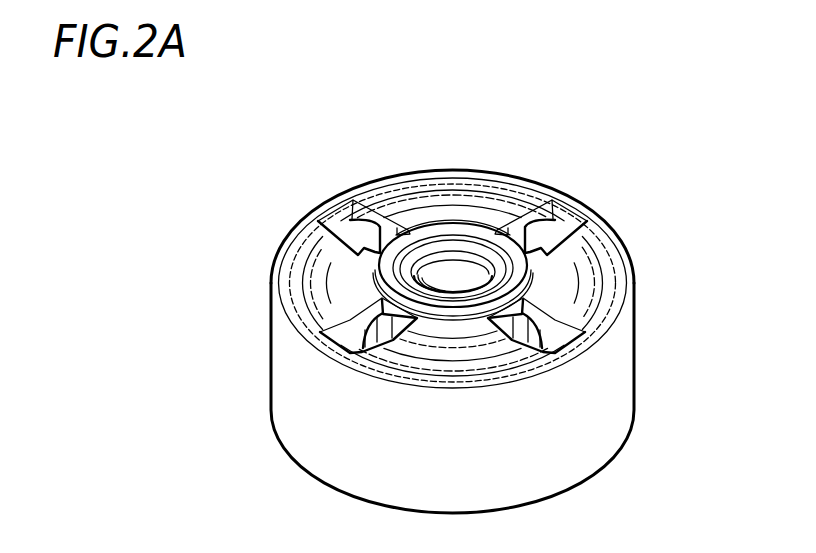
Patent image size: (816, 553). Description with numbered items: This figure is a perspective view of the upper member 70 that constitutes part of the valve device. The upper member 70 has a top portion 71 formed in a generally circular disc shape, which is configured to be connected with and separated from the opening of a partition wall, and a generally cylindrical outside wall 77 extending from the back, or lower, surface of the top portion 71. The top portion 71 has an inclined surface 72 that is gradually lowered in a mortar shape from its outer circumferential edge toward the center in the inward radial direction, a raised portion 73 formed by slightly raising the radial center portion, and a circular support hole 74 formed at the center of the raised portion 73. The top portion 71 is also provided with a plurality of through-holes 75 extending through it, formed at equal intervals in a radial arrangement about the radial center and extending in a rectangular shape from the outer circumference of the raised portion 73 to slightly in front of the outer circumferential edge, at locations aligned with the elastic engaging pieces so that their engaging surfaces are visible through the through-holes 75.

The upper member 70 is at (318, 196).
The top portion 71 is at (518, 179).
The inclined surface 72 is at (598, 279).
The raised portion 73 is at (534, 268).
The circular support hole 74 is at (458, 275).
The through-holes 75 is at (350, 233).
The outside wall 77 is at (278, 394).